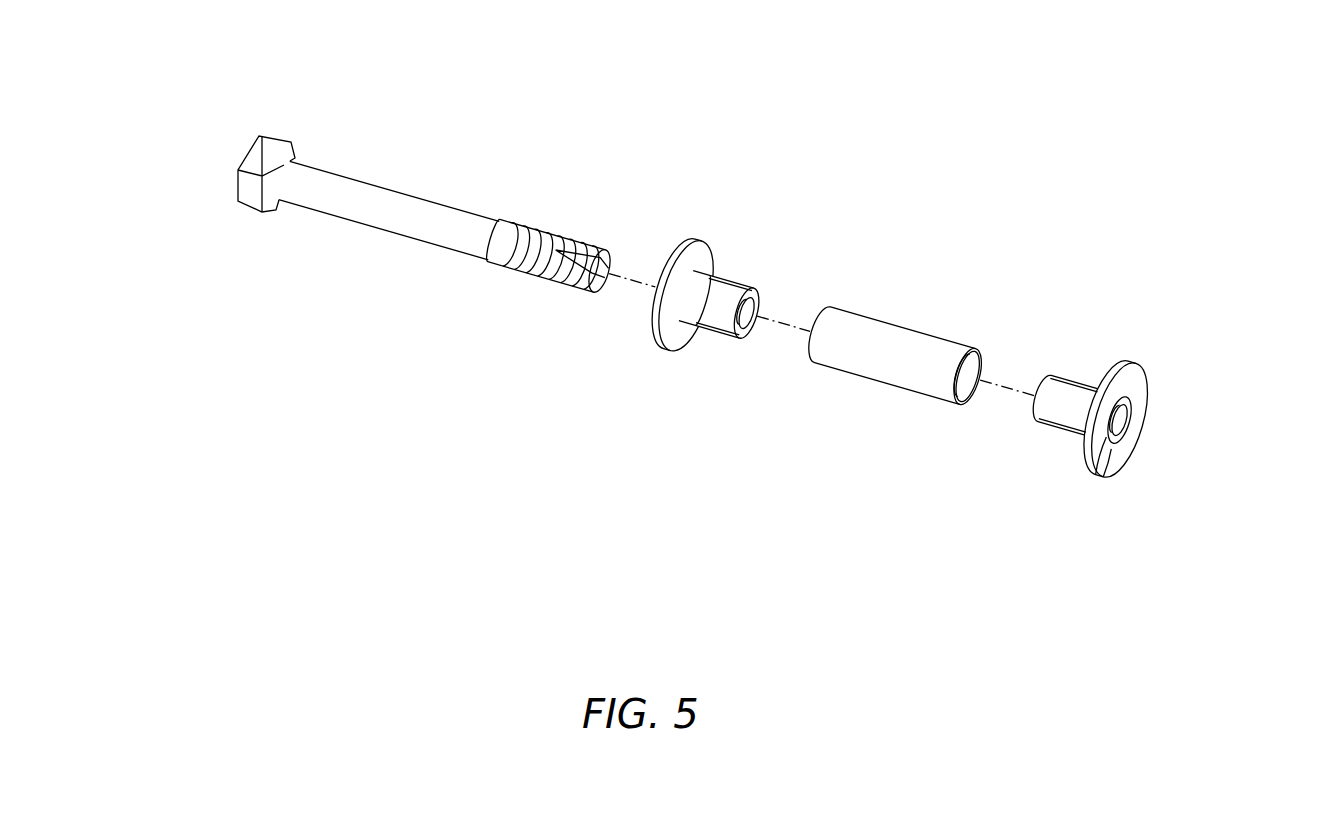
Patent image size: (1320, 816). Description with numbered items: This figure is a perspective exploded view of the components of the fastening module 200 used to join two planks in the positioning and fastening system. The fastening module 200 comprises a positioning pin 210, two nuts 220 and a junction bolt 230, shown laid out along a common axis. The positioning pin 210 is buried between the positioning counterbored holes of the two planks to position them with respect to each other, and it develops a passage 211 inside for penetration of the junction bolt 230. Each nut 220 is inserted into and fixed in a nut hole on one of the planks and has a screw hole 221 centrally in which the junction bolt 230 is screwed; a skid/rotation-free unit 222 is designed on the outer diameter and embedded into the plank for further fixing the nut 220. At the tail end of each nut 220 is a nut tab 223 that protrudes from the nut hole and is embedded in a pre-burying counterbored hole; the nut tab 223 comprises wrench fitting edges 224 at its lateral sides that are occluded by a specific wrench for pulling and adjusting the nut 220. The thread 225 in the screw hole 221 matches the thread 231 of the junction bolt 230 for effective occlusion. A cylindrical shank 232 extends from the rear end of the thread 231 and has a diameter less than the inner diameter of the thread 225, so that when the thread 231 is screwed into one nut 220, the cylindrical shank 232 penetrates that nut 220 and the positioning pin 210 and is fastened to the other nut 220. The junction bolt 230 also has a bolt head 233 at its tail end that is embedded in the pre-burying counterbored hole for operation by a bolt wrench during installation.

The fastening module 200 is at (328, 82).
The positioning pin 210 is at (880, 372).
The passage 211 is at (967, 393).
The nut 220 is at (612, 398).
The screw hole 221 is at (1130, 415).
The skid/rotation-free unit 222 is at (1075, 380).
The nut tab 223 is at (1142, 375).
The wrench fitting edges 224 is at (1092, 450).
The thread 225 is at (1120, 460).
The junction bolt 230 is at (304, 283).
The thread 231 is at (530, 267).
The cylindrical shank 232 is at (428, 234).
The bolt head 233 is at (247, 162).